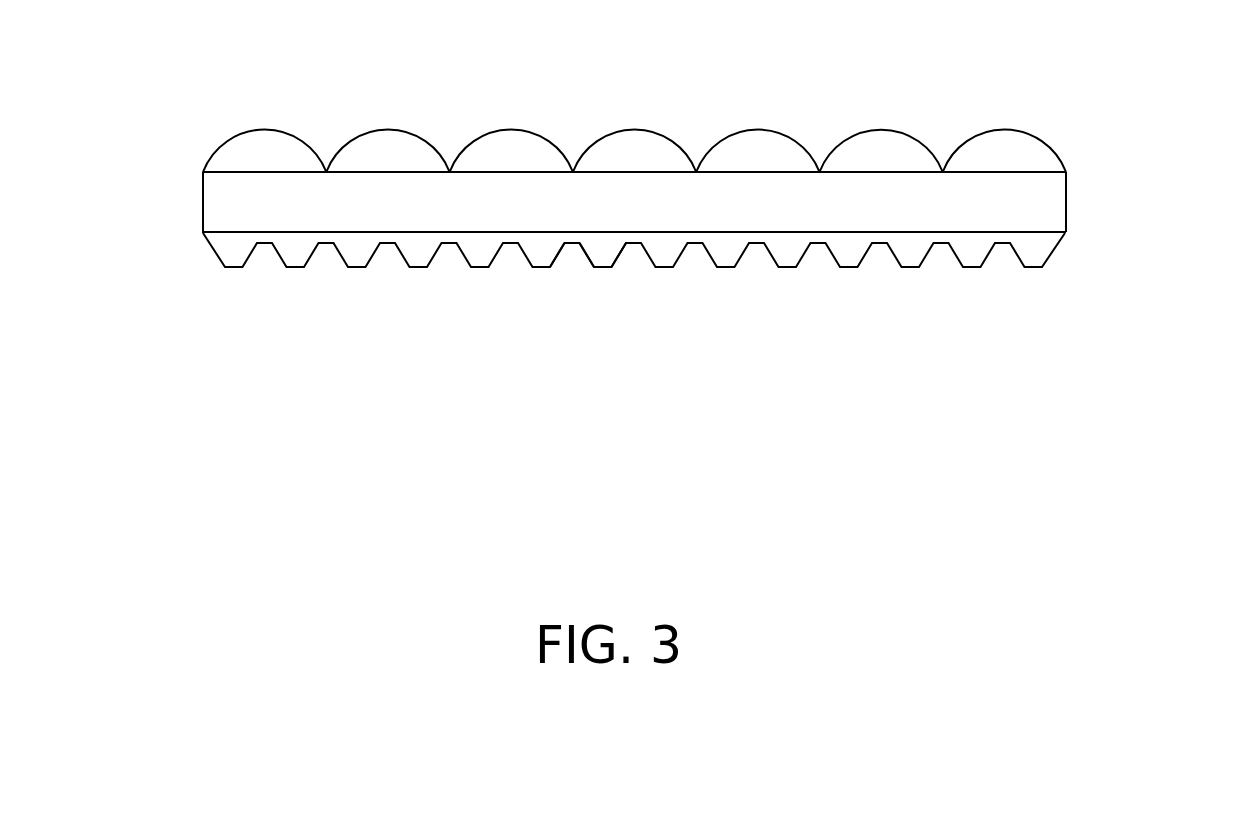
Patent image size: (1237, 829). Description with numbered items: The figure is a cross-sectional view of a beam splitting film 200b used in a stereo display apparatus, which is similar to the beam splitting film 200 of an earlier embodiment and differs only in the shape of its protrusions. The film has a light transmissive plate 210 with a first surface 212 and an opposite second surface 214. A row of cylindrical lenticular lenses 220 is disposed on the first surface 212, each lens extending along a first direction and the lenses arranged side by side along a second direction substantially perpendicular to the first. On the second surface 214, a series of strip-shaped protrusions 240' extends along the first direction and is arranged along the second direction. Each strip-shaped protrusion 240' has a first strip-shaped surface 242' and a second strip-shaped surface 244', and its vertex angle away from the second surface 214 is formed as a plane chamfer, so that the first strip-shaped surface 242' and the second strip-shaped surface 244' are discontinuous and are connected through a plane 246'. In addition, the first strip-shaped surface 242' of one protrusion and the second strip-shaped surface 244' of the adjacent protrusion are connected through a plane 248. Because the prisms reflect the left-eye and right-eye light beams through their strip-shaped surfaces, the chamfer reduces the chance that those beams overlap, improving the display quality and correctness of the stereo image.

The beam splitting film 200 is at (704, 211).
The beam splitting film 200b is at (1130, 416).
The light transmissive plate 210 is at (696, 148).
The first surface 212 is at (971, 166).
The second surface 214 is at (1059, 236).
The cylindrical lenticular lenses 220 is at (1022, 148).
The strip-shaped protrusion 240' is at (634, 312).
The first strip-shaped surface 242' is at (567, 296).
The second strip-shaped surface 244' is at (596, 316).
The plane 246' is at (600, 329).
The plane 248 is at (759, 247).